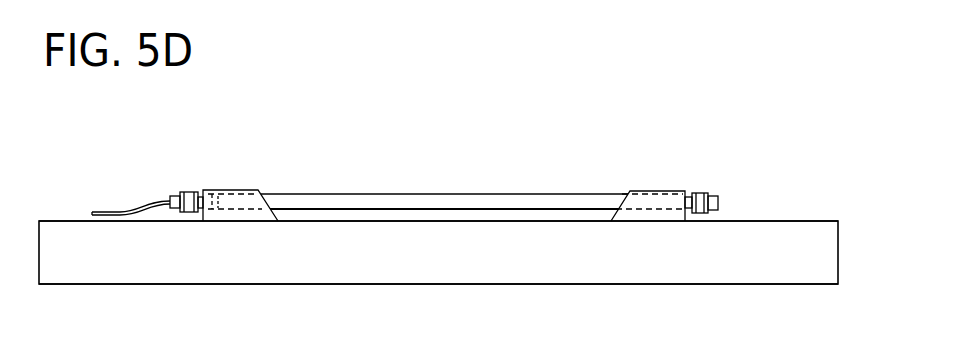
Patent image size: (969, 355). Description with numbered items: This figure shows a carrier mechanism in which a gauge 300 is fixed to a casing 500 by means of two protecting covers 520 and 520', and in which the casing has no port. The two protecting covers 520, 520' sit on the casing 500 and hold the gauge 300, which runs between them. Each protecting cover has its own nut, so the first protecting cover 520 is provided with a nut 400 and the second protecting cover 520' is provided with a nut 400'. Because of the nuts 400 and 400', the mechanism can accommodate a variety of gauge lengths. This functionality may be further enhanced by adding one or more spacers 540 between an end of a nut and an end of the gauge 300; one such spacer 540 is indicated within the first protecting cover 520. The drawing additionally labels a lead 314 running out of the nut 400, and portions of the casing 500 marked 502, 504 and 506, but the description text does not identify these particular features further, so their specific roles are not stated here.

The gauge 300 is at (463, 194).
The cable 314 is at (130, 212).
The nut 400 is at (174, 173).
The nut 400' is at (742, 177).
The casing 500 is at (451, 254).
The base 502 is at (708, 270).
The bottom surface 504 is at (53, 285).
The top surface 506 is at (798, 221).
The protecting cover 520 is at (240, 165).
The protecting cover 520' is at (659, 181).
The spacer 540 is at (220, 202).